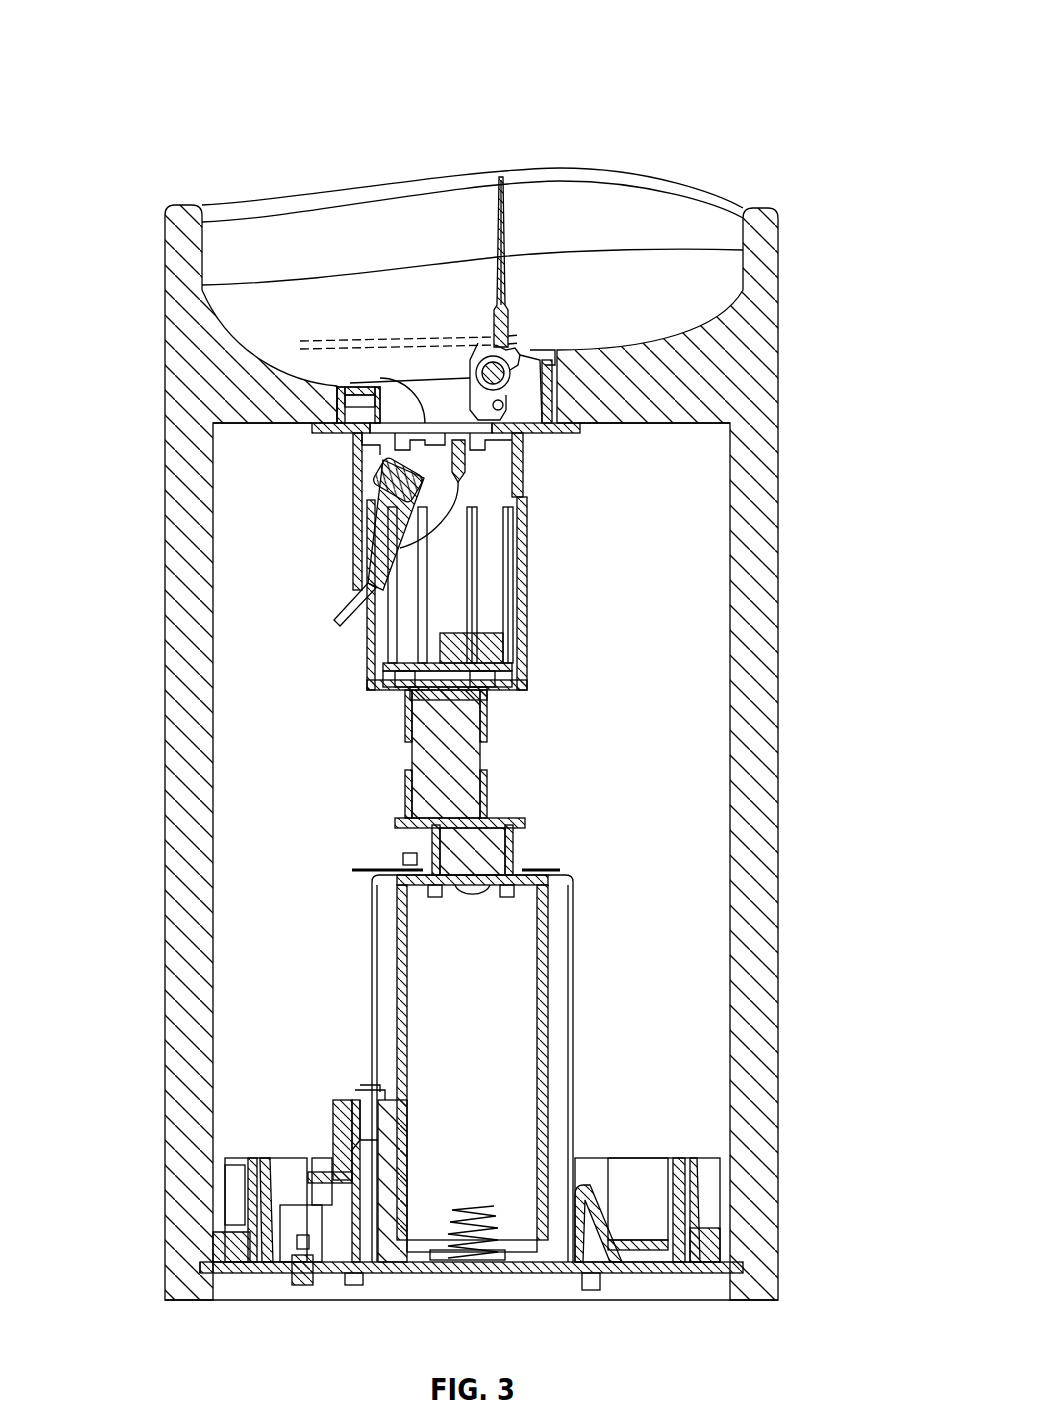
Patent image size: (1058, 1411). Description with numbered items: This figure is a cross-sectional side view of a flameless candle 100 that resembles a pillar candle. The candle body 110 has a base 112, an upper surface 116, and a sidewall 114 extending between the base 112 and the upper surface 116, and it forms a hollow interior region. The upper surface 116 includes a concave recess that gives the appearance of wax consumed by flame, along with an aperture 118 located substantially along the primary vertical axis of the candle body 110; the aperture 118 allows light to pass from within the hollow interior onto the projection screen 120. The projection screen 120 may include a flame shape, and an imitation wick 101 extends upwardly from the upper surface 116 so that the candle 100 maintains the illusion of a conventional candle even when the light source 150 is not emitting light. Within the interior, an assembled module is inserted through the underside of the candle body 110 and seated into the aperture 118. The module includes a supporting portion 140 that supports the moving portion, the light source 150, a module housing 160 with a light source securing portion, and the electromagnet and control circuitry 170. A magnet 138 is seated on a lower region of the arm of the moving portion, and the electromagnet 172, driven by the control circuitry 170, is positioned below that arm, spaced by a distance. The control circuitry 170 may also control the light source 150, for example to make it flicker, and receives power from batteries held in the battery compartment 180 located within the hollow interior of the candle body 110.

The flameless candle 100 is at (142, 152).
The imitation wick 101 is at (512, 338).
The candle body 110 is at (760, 352).
The base 112 is at (305, 1287).
The sidewall 114 is at (175, 478).
The upper surface 116 is at (257, 337).
The aperture 118 is at (400, 385).
The projection screen 120 is at (384, 310).
The magnet 138 is at (505, 677).
The supporting portion 140 is at (460, 482).
The light source 150 is at (395, 470).
The module housing 160 is at (530, 562).
The control circuitry 170 is at (370, 665).
The electromagnet 172 is at (517, 663).
The battery compartment 180 is at (563, 930).